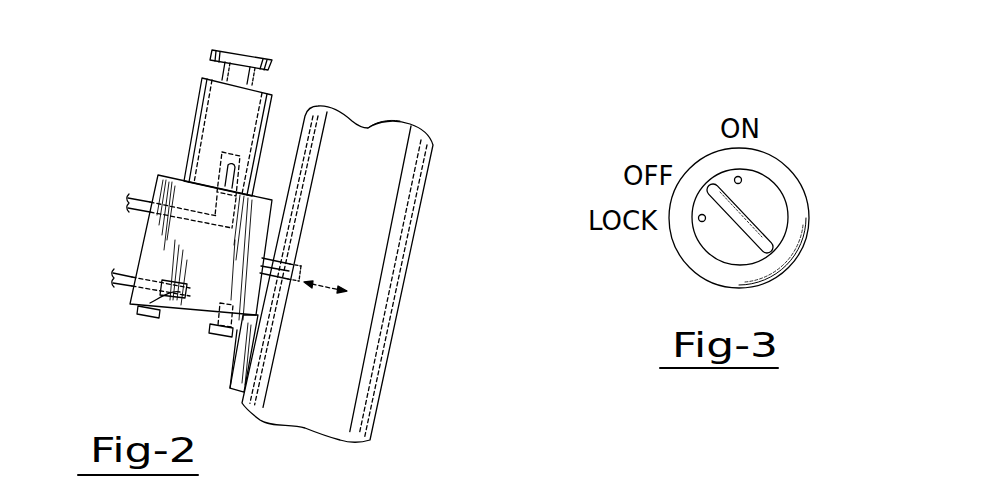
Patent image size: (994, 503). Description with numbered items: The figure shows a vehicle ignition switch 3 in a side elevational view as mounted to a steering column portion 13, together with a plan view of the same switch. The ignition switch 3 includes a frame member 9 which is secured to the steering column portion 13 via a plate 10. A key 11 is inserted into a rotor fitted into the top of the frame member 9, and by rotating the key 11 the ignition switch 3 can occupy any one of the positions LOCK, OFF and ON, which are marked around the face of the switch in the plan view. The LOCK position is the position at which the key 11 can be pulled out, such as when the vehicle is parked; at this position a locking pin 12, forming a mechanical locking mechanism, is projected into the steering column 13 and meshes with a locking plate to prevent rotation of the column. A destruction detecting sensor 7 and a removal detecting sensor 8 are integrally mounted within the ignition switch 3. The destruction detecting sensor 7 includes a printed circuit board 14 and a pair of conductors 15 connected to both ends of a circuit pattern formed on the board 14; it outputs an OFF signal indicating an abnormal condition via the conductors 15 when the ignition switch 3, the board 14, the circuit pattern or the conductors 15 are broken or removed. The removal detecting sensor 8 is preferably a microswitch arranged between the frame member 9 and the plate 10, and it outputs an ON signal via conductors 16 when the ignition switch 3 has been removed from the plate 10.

In FIG. 2, the ignition switch 3 is at (116, 63).
In FIG. 2, the destruction detecting sensor 7 is at (214, 173).
In FIG. 2, the removal detecting sensor 8 is at (163, 322).
In FIG. 2, the frame member 9 is at (258, 199).
In FIG. 3, the frame member 9 is at (785, 258).
In FIG. 2, the plate 10 is at (233, 362).
In FIG. 2, the key 11 is at (243, 52).
In FIG. 3, the key 11 is at (755, 215).
In FIG. 2, the locking pin 12 is at (267, 258).
In FIG. 2, the steering column portion 13 is at (395, 187).
In FIG. 2, the printed circuit board 14 is at (222, 160).
In FIG. 2, the conductors 15 is at (128, 200).
In FIG. 2, the conductors 16 is at (113, 278).